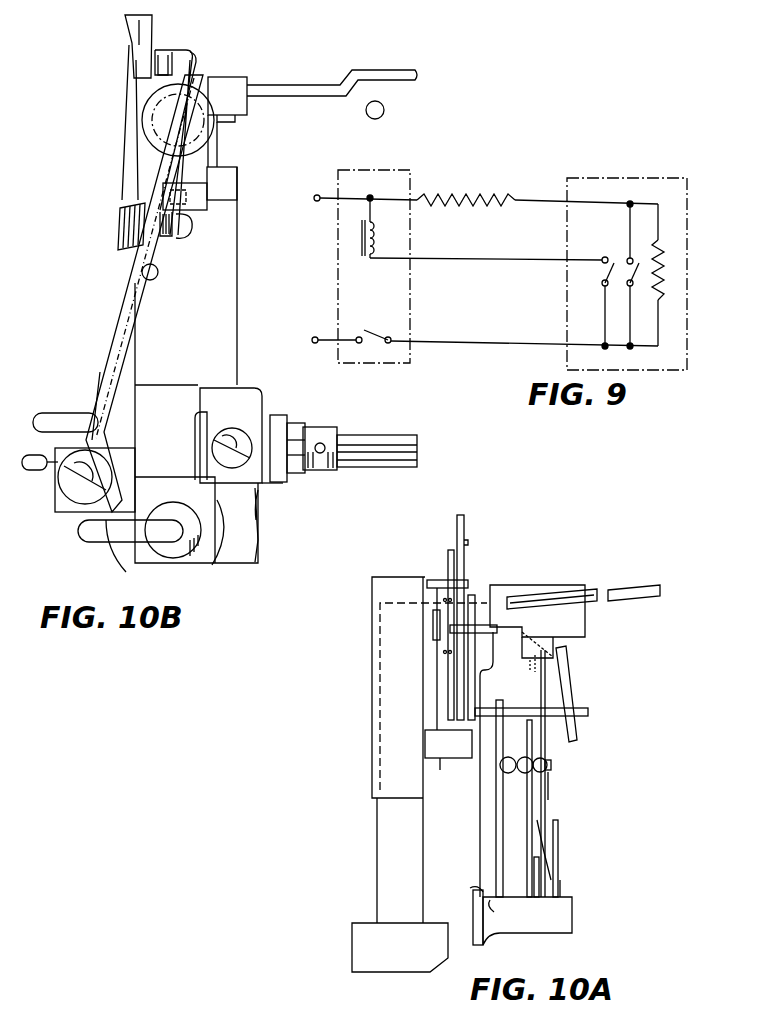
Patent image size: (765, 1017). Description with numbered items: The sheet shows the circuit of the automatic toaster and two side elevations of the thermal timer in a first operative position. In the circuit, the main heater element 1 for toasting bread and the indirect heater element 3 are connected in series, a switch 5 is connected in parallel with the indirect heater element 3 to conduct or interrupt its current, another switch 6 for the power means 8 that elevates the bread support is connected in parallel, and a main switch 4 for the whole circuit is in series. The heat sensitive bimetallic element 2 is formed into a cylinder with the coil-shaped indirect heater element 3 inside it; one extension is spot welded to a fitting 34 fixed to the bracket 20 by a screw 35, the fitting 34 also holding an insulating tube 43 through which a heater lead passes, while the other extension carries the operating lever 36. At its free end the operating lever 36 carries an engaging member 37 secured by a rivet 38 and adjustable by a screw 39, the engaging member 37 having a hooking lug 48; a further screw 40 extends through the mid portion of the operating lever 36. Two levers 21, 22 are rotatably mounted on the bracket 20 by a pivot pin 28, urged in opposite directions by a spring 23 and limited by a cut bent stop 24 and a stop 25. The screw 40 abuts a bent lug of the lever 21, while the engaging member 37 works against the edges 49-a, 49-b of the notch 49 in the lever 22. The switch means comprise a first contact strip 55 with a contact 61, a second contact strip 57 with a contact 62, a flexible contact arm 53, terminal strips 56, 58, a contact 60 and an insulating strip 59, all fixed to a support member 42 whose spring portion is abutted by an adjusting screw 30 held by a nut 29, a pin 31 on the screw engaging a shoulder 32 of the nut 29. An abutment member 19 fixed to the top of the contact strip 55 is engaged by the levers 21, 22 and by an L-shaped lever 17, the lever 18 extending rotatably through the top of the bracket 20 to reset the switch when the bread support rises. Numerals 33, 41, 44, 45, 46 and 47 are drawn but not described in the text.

In FIG. 9, the main heater element 1 is at (489, 199).
In FIG. 9, the indirect heater element 3 is at (665, 293).
In FIG. 9, the main switch 4 is at (380, 337).
In FIG. 9, the switch 5 is at (639, 288).
In FIG. 10A, the switch 5 is at (540, 757).
In FIG. 9, the switch 6 is at (598, 272).
In FIG. 10A, the switch 6 is at (511, 757).
In FIG. 9, the power means 8 is at (366, 258).
In FIG. 10B, the heat sensitive bimetallic element 2 is at (110, 552).
In FIG. 10A, the heat sensitive bimetallic element 2 is at (410, 965).
In FIG. 10B, the L-shaped lever 17 is at (312, 98).
In FIG. 10A, the L-shaped lever 17 is at (574, 684).
In FIG. 10B, the lever 18 is at (384, 110).
In FIG. 10A, the abutment member 19 is at (588, 712).
In FIG. 10B, the bracket 20 is at (232, 300).
In FIG. 10A, the bracket 20 is at (515, 585).
In FIG. 10A, the lever 21 is at (455, 758).
In FIG. 10A, the lever 22 is at (465, 525).
In FIG. 10B, the spring 23 is at (130, 63).
In FIG. 10A, the spring 23 is at (449, 552).
In FIG. 10B, the cut bent stop 24 is at (205, 190).
In FIG. 10A, the cut bent stop 24 is at (440, 731).
In FIG. 10B, the stop 25 is at (236, 116).
In FIG. 10A, the stop 25 is at (480, 625).
In FIG. 10A, the pivot pin 28 is at (433, 625).
In FIG. 10B, the nut 29 is at (288, 421).
In FIG. 10B, the adjusting screw 30 is at (375, 435).
In FIG. 10B, the pin 31 is at (324, 443).
In FIG. 10B, the shoulder 32 is at (320, 426).
In FIG. 10B, the lever arm 33 is at (98, 386).
In FIG. 10A, the lever arm 33 is at (470, 893).
In FIG. 10B, the fitting 34 is at (244, 384).
In FIG. 10A, the fitting 34 is at (472, 905).
In FIG. 10B, the screw 35 is at (236, 427).
In FIG. 10B, the operating lever 36 is at (108, 322).
In FIG. 10A, the operating lever 36 is at (420, 846).
In FIG. 10B, the engaging member 37 is at (187, 136).
In FIG. 10A, the engaging member 37 is at (420, 790).
In FIG. 10B, the rivet 38 is at (156, 276).
In FIG. 10B, the screw 39 is at (200, 57).
In FIG. 10A, the screw 39 is at (380, 577).
In FIG. 10B, the screw 40 is at (176, 240).
In FIG. 10B, the spring seat 41 is at (198, 216).
In FIG. 10B, the support member 42 is at (258, 511).
In FIG. 10B, the insulating tube 43 is at (162, 546).
In FIG. 10B, the pin 44 is at (78, 532).
In FIG. 10B, the pin 45 is at (30, 470).
In FIG. 10B, the pin 46 is at (60, 413).
In FIG. 10B, the plate 47 is at (283, 483).
In FIG. 10A, the hooking lug 48 is at (440, 580).
In FIG. 10B, the notch 49 is at (163, 54).
In FIG. 10B, the edge of notch 49-a is at (127, 24).
In FIG. 10B, the edge of notch 49-b is at (190, 50).
In FIG. 10B, the flexible contact arm 53 is at (55, 495).
In FIG. 10A, the flexible contact arm 53 is at (560, 888).
In FIG. 10A, the first contact strip 55 is at (570, 742).
In FIG. 10A, the terminal strip 56 is at (562, 830).
In FIG. 10A, the second contact strip 57 is at (540, 850).
In FIG. 10A, the terminal strip 58 is at (540, 865).
In FIG. 10A, the insulating strip 59 is at (493, 900).
In FIG. 10A, the contact 60 is at (548, 762).
In FIG. 10A, the contact 61 is at (550, 770).
In FIG. 10A, the contact 62 is at (550, 790).